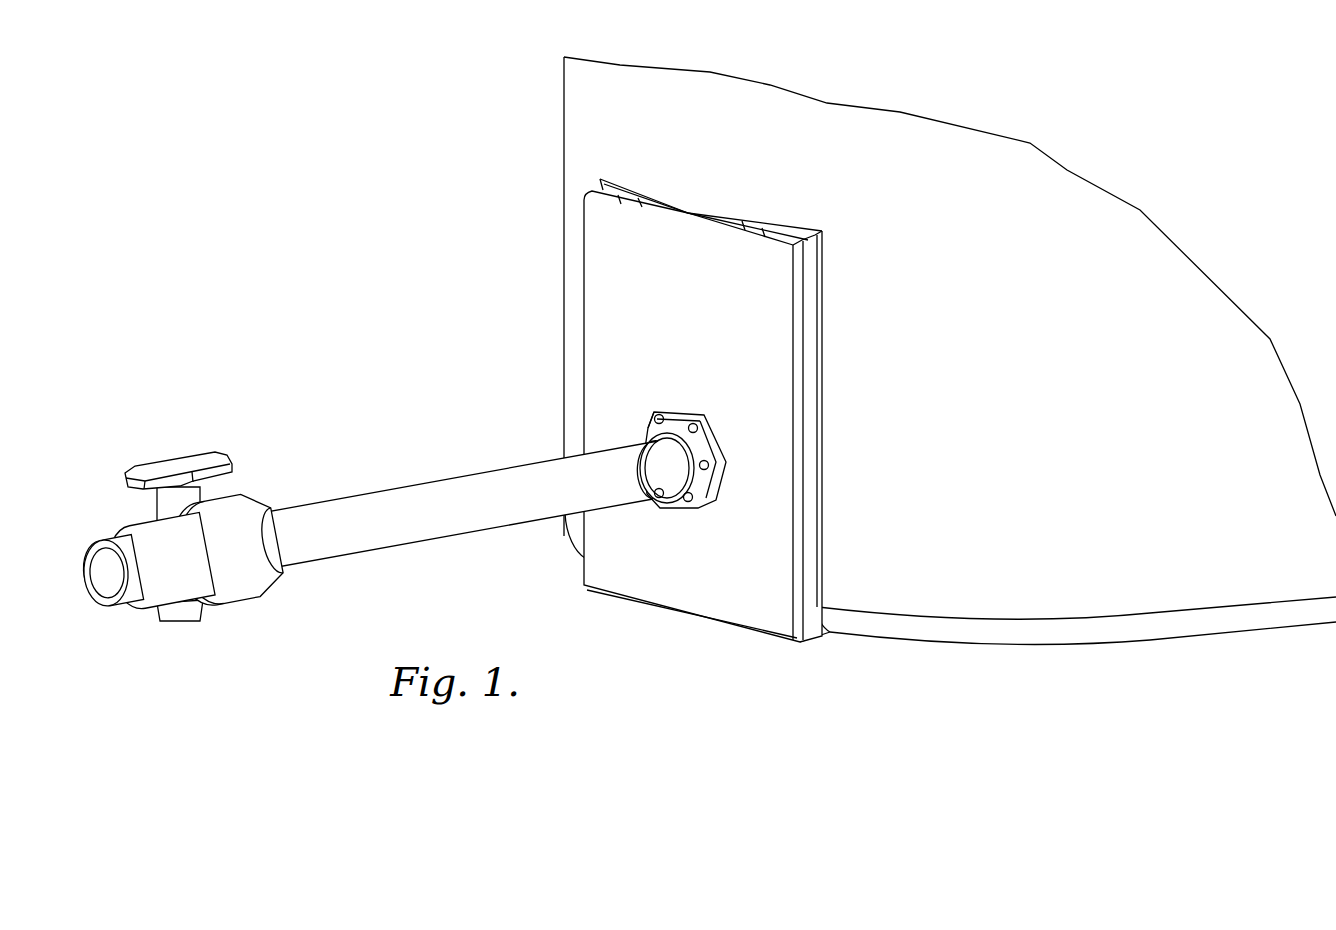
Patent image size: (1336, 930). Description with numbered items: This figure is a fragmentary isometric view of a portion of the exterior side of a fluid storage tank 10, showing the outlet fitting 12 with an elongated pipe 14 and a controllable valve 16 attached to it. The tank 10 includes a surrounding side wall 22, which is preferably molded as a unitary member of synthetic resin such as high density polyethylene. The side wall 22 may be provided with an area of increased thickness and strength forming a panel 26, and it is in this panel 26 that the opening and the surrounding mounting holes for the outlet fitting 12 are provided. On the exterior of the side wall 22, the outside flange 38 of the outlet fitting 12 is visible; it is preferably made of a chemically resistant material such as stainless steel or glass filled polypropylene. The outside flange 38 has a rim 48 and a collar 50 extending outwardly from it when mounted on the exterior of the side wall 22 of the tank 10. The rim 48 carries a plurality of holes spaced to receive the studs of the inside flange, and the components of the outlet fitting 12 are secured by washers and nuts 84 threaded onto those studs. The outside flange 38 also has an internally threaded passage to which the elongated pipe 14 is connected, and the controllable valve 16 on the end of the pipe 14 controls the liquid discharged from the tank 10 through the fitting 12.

The fluid storage tank 10 is at (765, 74).
The side wall 22 is at (940, 155).
The panel 26 is at (770, 328).
The elongated pipe 14 is at (425, 492).
The outlet fitting 12 is at (709, 431).
The outside flange 38 is at (710, 437).
The rim 48 is at (675, 416).
The collar 50 is at (695, 477).
The nuts 84 is at (702, 510).
The controllable valve 16 is at (142, 604).